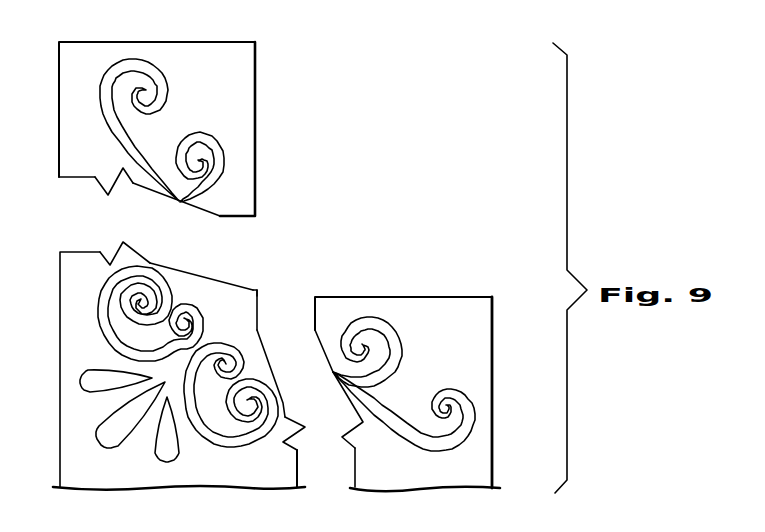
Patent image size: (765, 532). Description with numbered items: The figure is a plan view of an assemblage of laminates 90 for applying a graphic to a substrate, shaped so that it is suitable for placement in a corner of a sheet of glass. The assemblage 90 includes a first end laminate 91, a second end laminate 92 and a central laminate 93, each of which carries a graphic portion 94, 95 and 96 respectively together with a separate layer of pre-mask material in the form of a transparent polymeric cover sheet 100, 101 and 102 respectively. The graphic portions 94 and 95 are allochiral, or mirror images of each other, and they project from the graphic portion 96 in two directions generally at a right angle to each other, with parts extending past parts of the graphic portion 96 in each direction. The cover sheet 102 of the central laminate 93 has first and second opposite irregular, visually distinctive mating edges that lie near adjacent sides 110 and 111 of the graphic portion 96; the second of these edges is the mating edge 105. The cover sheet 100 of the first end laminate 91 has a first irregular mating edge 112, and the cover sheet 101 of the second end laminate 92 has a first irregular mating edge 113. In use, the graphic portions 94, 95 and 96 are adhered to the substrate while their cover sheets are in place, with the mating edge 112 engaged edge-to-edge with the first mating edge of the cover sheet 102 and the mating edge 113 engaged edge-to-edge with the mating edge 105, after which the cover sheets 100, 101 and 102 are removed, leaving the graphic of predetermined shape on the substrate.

The assemblage of laminates 90 is at (353, 221).
The first end laminate 91 is at (233, 45).
The second end laminate 92 is at (490, 319).
The central laminate 93 is at (78, 258).
The graphic portion 94 is at (133, 62).
The graphic portion 95 is at (443, 385).
The graphic portion 96 is at (258, 290).
The cover sheet 100 is at (240, 95).
The cover sheet 101 is at (488, 450).
The cover sheet 102 is at (73, 317).
The second irregular mating edge 105 is at (276, 366).
The side of graphic portion 110 is at (150, 263).
The side of graphic portion 111 is at (285, 439).
The first irregular mating edge 112 is at (133, 183).
The first irregular mating edge 113 is at (337, 384).